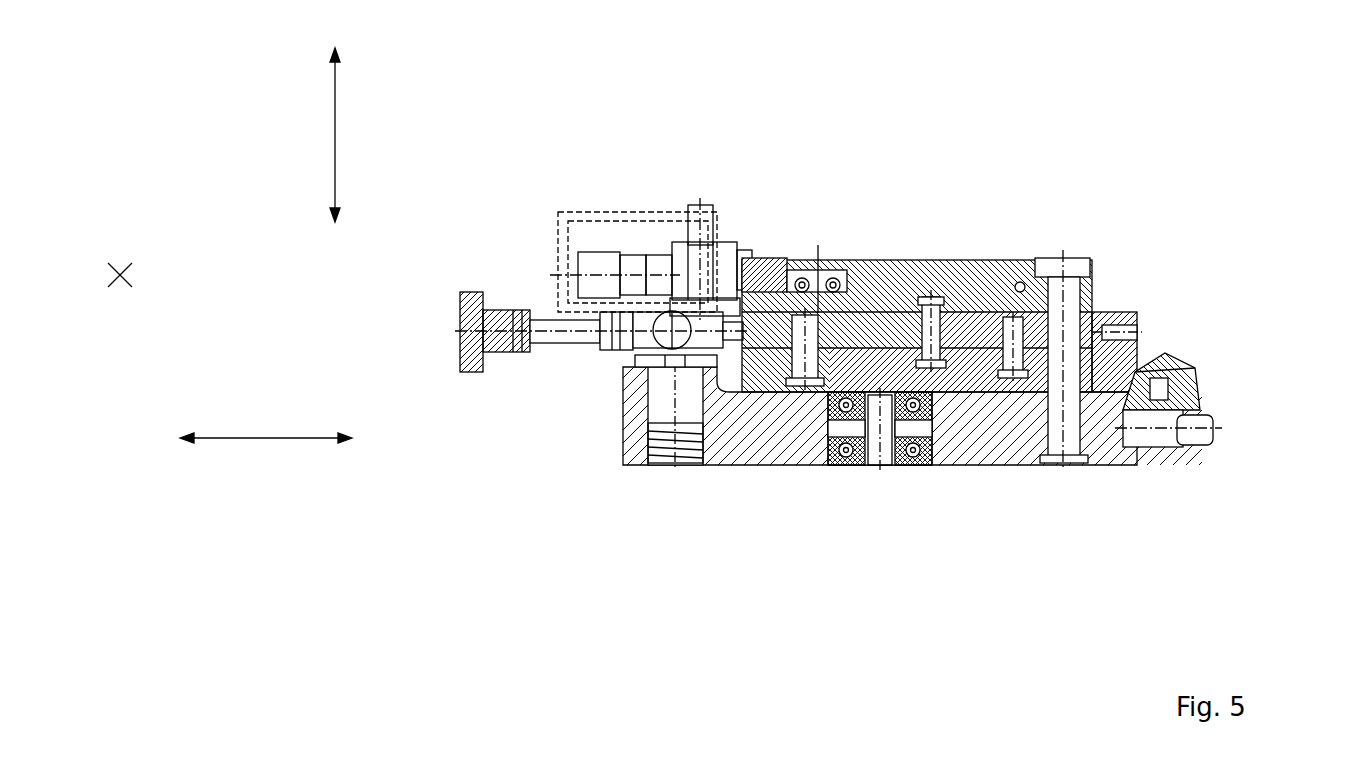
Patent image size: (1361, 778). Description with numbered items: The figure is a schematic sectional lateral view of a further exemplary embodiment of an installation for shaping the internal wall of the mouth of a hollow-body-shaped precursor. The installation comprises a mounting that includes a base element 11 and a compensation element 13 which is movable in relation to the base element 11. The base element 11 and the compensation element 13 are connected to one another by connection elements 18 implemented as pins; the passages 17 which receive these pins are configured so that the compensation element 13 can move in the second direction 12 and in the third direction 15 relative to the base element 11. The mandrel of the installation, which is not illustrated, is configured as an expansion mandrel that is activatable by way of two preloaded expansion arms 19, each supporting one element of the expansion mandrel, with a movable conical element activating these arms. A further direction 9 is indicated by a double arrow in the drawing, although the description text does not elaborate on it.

The vertical adjustment direction 9 is at (345, 135).
The base element 11 is at (1133, 367).
The second direction 12 is at (266, 423).
The compensation element 13 is at (1143, 328).
The third direction 15 is at (123, 262).
The passages 17 is at (800, 383).
The connection elements 18 is at (1047, 453).
The expansion arm 19 is at (900, 260).